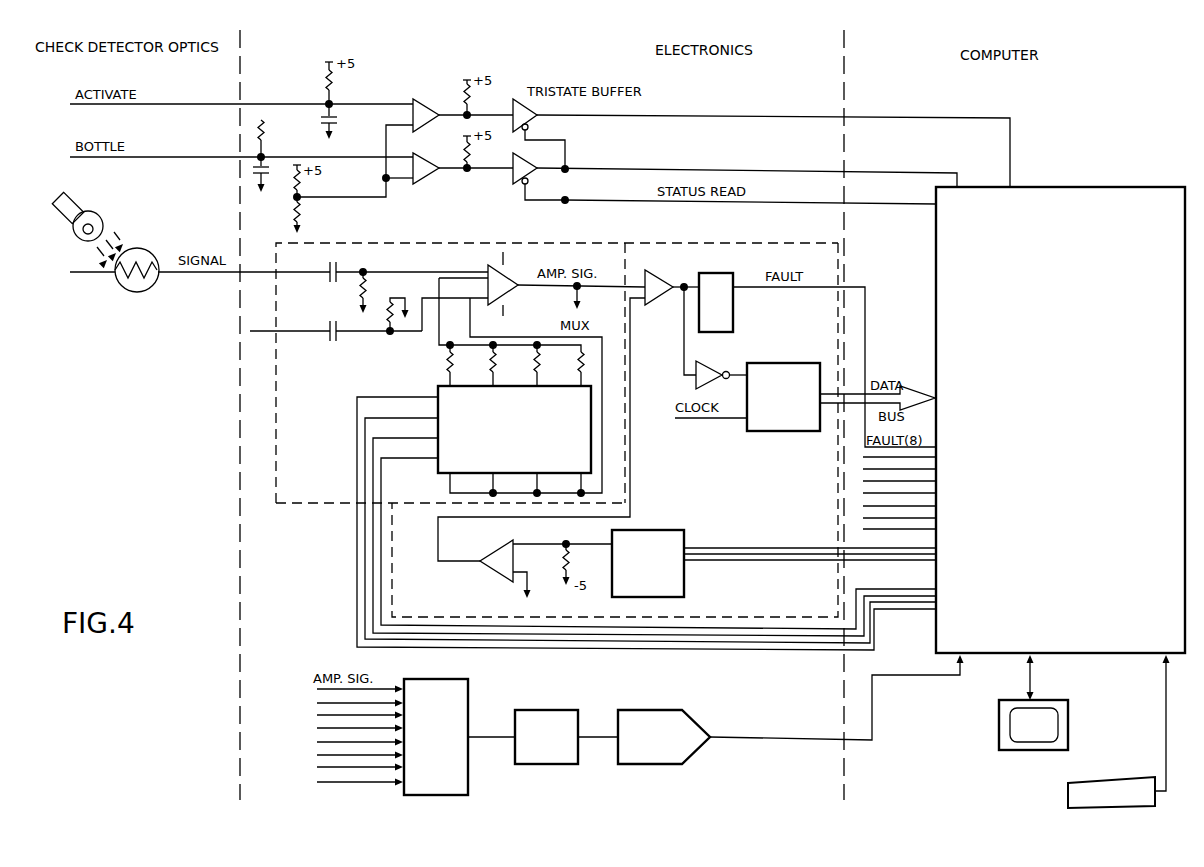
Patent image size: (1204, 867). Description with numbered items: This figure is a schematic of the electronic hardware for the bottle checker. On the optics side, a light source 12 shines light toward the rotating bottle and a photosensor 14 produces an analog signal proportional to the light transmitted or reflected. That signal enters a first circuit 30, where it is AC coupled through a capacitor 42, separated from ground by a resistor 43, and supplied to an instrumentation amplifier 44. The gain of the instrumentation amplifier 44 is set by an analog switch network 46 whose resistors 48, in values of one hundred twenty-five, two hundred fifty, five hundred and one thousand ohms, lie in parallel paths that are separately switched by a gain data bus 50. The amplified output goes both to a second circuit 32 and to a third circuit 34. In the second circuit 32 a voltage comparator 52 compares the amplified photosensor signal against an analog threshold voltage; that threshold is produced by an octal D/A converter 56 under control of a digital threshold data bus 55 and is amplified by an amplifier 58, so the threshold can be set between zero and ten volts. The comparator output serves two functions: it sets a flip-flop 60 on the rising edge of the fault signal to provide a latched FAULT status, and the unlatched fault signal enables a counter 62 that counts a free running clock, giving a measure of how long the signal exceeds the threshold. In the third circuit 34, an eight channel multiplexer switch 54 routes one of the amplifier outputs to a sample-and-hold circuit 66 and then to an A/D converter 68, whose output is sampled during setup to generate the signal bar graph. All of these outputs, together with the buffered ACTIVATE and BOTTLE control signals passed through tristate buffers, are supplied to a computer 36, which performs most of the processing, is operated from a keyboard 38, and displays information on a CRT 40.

The light source 12 is at (91, 213).
The light sensor (photosensor) 14 is at (163, 247).
The first circuit 30 is at (290, 433).
The second circuit 32 is at (398, 599).
The third circuit 34 is at (595, 773).
The computer 36 is at (936, 328).
The keyboard 38 is at (1082, 782).
The CRT 40 is at (1050, 700).
The capacitor 42 is at (338, 267).
The resistor 43 is at (356, 291).
The instrumentation amplifier 44 is at (488, 268).
The analog switch network 46 is at (438, 473).
The resistors 48 is at (442, 361).
The gain data bus 50 is at (350, 578).
The voltage comparator 52 is at (677, 273).
The eight channel multiplexer switch 54 is at (470, 692).
The digital threshold data bus 55 is at (706, 547).
The octal D/A converter 56 is at (652, 530).
The amplifier 58 is at (487, 573).
The flip-flop 60 is at (735, 331).
The counter 62 is at (802, 363).
The sample-and-hold circuit 66 is at (549, 710).
The A/D converter 68 is at (648, 710).